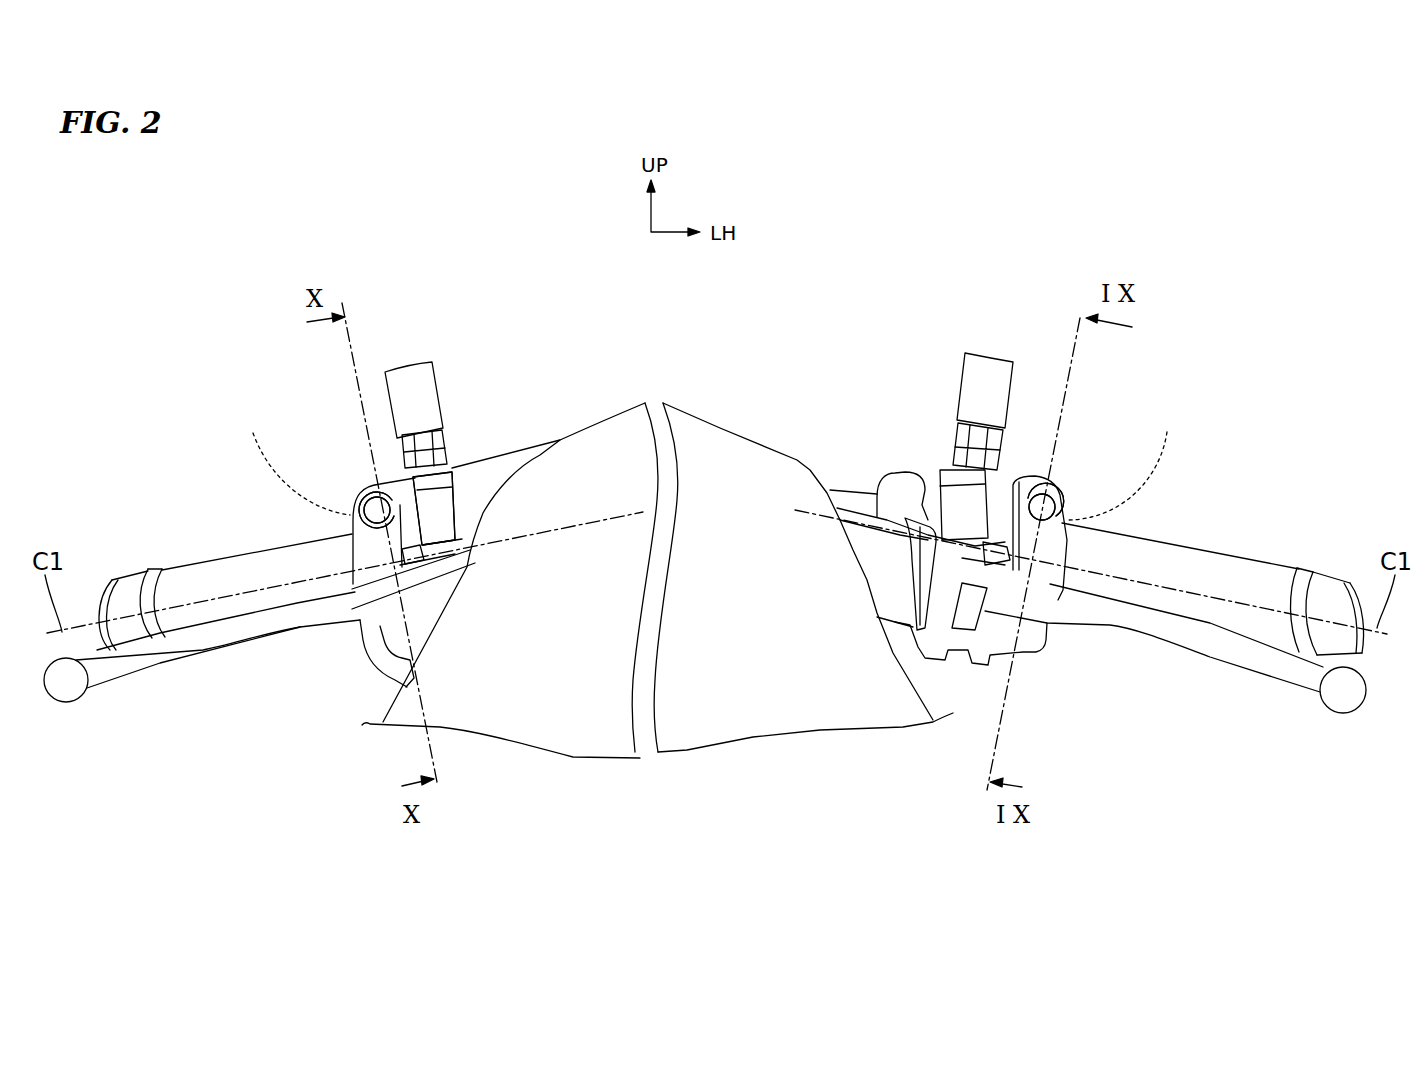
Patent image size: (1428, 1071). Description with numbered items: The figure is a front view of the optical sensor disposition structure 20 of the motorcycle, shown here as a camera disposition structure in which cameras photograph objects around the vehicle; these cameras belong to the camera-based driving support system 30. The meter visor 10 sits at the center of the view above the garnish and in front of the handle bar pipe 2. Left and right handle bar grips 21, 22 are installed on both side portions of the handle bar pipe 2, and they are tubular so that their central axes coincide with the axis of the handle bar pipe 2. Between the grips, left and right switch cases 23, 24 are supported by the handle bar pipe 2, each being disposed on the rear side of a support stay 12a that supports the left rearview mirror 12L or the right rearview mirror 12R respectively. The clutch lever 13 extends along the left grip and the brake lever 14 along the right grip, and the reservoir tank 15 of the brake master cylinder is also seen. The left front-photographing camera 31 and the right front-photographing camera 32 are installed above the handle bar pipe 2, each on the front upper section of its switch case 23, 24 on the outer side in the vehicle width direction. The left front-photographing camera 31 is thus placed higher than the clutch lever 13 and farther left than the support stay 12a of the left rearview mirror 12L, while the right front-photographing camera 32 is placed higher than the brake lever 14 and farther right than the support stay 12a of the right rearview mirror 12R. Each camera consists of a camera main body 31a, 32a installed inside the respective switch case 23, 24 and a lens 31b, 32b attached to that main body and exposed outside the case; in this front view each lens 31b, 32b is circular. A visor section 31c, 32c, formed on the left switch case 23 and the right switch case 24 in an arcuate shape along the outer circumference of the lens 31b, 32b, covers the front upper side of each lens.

The handle bar pipe 2 is at (847, 494).
The meter visor 10 is at (730, 457).
The right rearview mirror 12R is at (428, 383).
The left rearview mirror 12L is at (980, 377).
The support stay 12a is at (438, 510).
The clutch lever 13 is at (1217, 655).
The brake lever 14 is at (203, 650).
The reservoir tank of a brake master cylinder 15 is at (494, 472).
The optical sensor disposition structure 20 is at (1046, 396).
The left handle bar grip 21 is at (1220, 570).
The right handle bar grip 22 is at (196, 569).
The left switch case 23 is at (1057, 543).
The right switch case 24 is at (358, 556).
The driving support system 30 is at (246, 488).
The left front-photographing camera 31 is at (1196, 400).
The camera main body 31a is at (1130, 462).
The lens 31b is at (1048, 500).
The visor section 31c is at (1040, 488).
The right front-photographing camera 32 is at (342, 400).
The camera main body 32a is at (287, 460).
The lens 32b is at (373, 507).
The visor section 32c is at (386, 494).